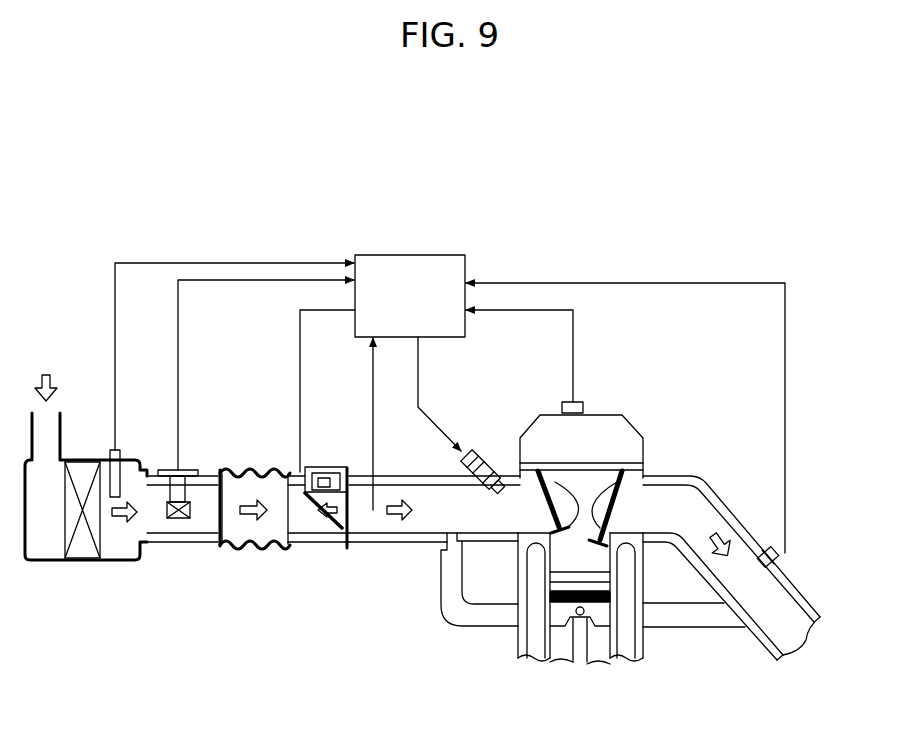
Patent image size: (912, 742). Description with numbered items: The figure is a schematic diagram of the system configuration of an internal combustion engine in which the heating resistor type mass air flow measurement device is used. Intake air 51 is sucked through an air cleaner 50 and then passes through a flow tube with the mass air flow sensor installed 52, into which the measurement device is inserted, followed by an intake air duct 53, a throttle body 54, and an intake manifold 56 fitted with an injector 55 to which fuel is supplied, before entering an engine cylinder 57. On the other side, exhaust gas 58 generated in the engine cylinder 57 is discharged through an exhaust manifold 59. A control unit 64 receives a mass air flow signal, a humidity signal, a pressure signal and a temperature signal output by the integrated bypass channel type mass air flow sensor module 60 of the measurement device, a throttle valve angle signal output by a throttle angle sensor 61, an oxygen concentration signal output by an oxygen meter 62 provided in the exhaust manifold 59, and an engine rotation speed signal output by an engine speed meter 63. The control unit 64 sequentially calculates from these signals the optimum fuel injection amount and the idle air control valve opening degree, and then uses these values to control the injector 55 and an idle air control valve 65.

The air cleaner 50 is at (50, 560).
The intake air 51 is at (46, 375).
The flow tube with mass air flow sensor installed 52 is at (173, 543).
The intake air duct 53 is at (250, 550).
The throttle body 54 is at (330, 545).
The injector 55 is at (478, 452).
The intake manifold 56 is at (397, 545).
The engine cylinder 57 is at (563, 650).
The exhaust gas 58 is at (714, 532).
The exhaust manifold 59 is at (668, 478).
The integrated bypass channel type mass air flow sensor module 60 is at (190, 470).
The throttle angle sensor 61 is at (325, 465).
The oxygen meter 62 is at (782, 553).
The engine speed meter 63 is at (580, 400).
The control unit 64 is at (408, 255).
The idle air control valve 65 is at (317, 527).